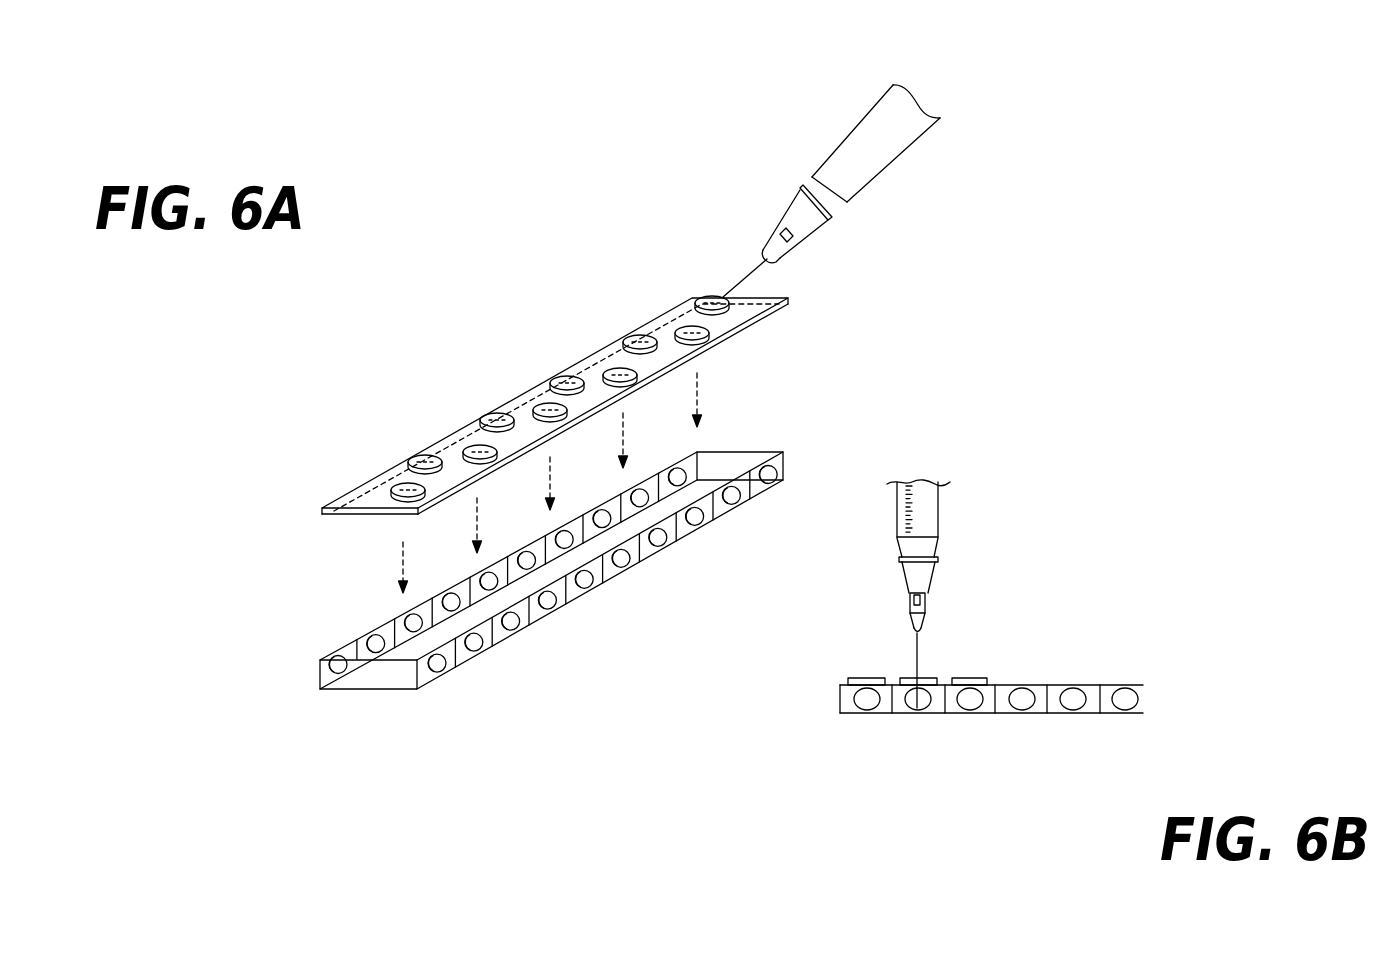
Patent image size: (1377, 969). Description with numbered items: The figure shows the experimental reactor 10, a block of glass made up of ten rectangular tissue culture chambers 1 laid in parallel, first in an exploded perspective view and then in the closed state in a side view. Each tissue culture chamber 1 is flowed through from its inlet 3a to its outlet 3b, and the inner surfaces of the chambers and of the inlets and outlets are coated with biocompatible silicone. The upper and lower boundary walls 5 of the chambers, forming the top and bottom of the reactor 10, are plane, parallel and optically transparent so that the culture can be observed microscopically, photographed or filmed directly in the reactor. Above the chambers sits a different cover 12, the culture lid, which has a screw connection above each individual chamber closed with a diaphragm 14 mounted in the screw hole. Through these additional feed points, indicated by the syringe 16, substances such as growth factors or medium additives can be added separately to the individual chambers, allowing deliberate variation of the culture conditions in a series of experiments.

In FIG. 6B, the tissue culture chamber 1 is at (1125, 713).
In FIG. 6A, the inlet 3a is at (548, 620).
In FIG. 6A, the outlet 3b is at (412, 615).
In FIG. 6A, the boundary wall 5 is at (380, 683).
In FIG. 6A, the reactor 10 is at (604, 612).
In FIG. 6B, the reactor 10 is at (1114, 661).
In FIG. 6A, the cover 12 is at (519, 397).
In FIG. 6A, the diaphragm 14 is at (392, 482).
In FIG. 6B, the diaphragm 14 is at (965, 678).
In FIG. 6A, the syringe 16 is at (898, 156).
In FIG. 6B, the syringe 16 is at (938, 528).